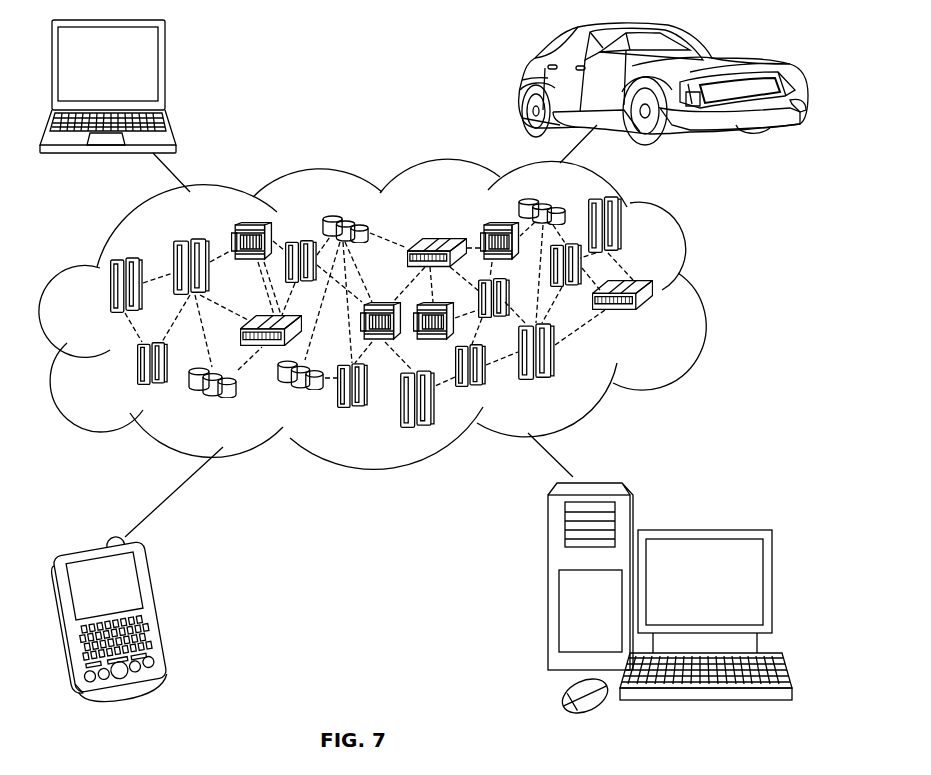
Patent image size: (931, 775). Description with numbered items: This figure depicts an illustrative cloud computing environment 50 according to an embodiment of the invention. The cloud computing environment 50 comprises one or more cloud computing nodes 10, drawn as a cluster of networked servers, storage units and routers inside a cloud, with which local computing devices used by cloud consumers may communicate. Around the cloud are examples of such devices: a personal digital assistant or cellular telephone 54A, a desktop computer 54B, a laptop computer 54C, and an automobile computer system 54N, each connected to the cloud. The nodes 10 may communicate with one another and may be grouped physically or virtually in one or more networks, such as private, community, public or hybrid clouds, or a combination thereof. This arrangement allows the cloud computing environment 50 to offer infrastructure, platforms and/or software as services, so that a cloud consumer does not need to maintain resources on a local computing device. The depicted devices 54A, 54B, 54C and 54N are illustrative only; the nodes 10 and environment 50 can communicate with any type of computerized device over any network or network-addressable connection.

The cloud computing node 10 is at (655, 318).
The cloud computing environment 50 is at (702, 290).
The personal digital assistant (PDA) or cellular telephone 54A is at (157, 607).
The desktop computer 54B is at (703, 530).
The laptop computer 54C is at (165, 70).
The automobile computer system 54N is at (521, 80).